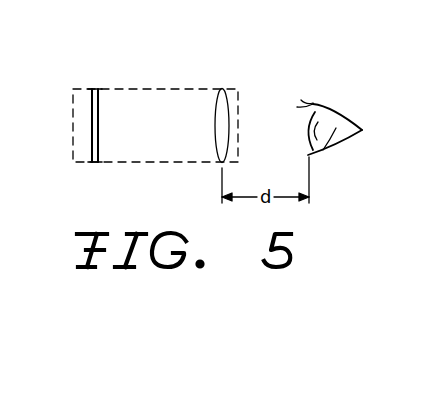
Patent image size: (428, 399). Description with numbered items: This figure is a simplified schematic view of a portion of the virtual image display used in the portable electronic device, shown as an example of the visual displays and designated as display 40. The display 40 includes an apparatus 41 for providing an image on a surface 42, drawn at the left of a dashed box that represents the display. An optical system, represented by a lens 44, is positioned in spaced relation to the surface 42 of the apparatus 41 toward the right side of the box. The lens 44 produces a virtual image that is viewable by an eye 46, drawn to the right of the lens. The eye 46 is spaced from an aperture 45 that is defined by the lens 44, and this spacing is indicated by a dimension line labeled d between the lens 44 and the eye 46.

The display 40 is at (198, 69).
The apparatus 41 is at (92, 141).
The surface 42 is at (100, 104).
The lens 44 is at (221, 137).
The aperture 45 is at (283, 101).
The eye 46 is at (324, 133).